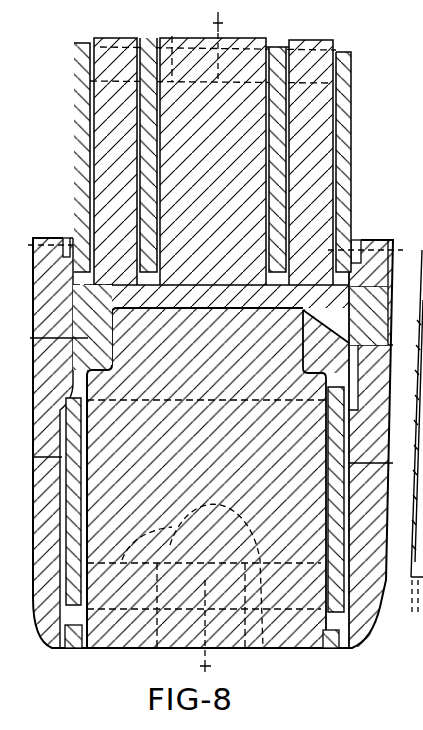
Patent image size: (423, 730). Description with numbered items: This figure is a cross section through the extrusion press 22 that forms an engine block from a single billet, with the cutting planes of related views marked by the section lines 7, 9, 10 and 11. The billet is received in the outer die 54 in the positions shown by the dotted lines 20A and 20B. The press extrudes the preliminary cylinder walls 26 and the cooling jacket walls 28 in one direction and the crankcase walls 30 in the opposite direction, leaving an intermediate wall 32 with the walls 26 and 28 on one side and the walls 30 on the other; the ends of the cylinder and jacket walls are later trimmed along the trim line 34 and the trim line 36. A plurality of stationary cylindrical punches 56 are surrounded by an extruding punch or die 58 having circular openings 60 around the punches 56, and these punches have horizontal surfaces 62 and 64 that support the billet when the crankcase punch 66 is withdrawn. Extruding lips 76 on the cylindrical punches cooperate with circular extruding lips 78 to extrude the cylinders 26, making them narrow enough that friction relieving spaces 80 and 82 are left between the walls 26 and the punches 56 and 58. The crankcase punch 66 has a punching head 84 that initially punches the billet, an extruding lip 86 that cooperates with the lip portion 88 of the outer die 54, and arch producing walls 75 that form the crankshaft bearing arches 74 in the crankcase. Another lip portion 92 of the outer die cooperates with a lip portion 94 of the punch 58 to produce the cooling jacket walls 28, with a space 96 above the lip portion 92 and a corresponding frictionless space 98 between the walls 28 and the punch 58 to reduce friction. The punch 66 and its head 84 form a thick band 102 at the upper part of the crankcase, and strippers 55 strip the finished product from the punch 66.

The section line 7— 7 is at (213, 18).
The section line 9— 9 is at (29, 243).
The section line 10— 10 is at (46, 454).
The section line 11— 11 is at (48, 352).
The dotted line position of billet 20A is at (146, 399).
The dotted line position of billet 20B is at (116, 291).
The press 22 is at (52, 664).
The cylinder walls 26 is at (279, 53).
The cooling jacket walls 28 is at (78, 167).
The crankcase walls 30 is at (75, 513).
The intermediate wall 32 is at (205, 313).
The trim line 34 is at (165, 36).
The trim line 36 is at (128, 548).
The outer die 54 is at (49, 636).
The strippers 55 is at (70, 644).
The cylindrical punches 56 is at (234, 57).
The extruding punch or die 58 is at (100, 130).
The circular openings 60 is at (137, 97).
The horizontal surface 62 is at (182, 292).
The horizontal surface 64 is at (294, 284).
The crankcase punch 66 is at (290, 634).
The crankshaft bearing arches 74 is at (240, 516).
The arch producing walls 75 is at (264, 650).
The extruding lips 76 is at (160, 278).
The circular extruding lips 78 is at (133, 277).
The friction relieving space 80 is at (268, 120).
The friction relieving space 82 is at (320, 72).
The punching head 84 is at (288, 343).
The extruding lip 86 is at (326, 378).
The lip portion 88 is at (346, 383).
The lip portion 92 is at (350, 278).
The lip portion 94 is at (360, 294).
The space 96 is at (67, 237).
The frictionless space 98 is at (88, 58).
The thick band 102 is at (306, 358).